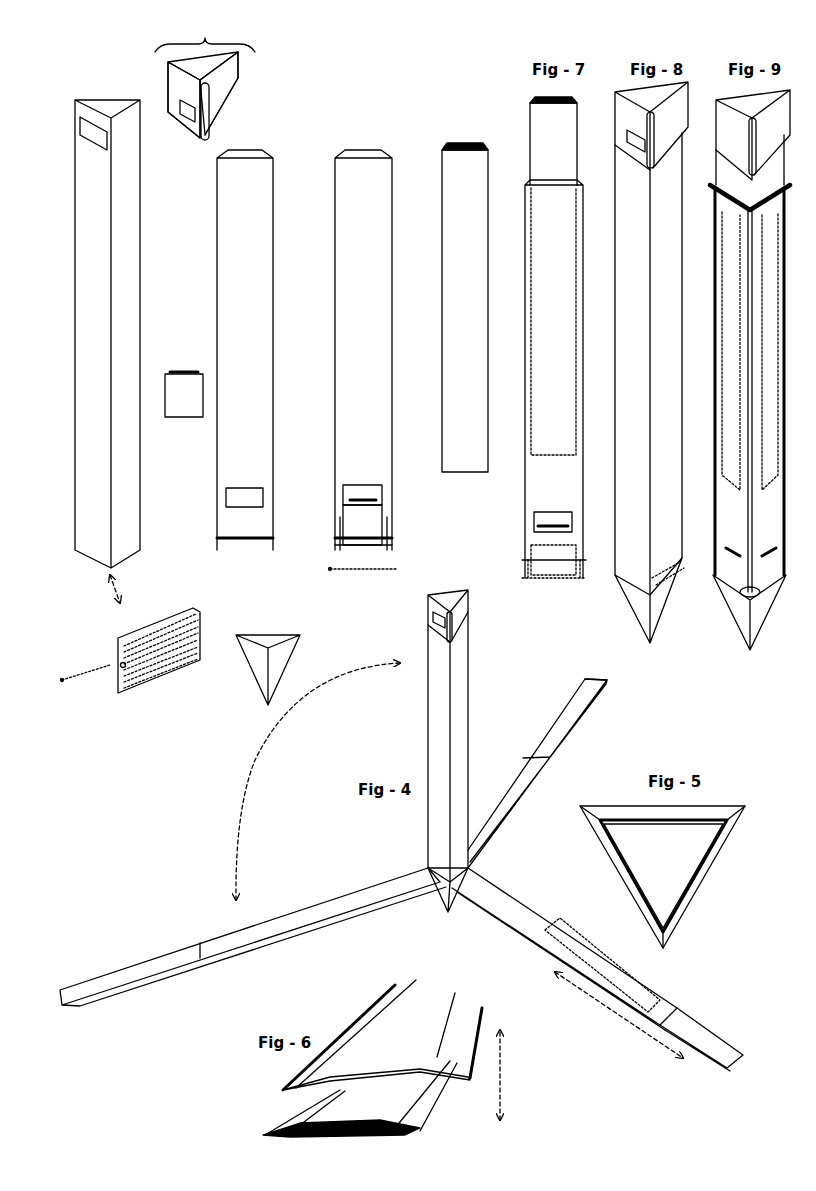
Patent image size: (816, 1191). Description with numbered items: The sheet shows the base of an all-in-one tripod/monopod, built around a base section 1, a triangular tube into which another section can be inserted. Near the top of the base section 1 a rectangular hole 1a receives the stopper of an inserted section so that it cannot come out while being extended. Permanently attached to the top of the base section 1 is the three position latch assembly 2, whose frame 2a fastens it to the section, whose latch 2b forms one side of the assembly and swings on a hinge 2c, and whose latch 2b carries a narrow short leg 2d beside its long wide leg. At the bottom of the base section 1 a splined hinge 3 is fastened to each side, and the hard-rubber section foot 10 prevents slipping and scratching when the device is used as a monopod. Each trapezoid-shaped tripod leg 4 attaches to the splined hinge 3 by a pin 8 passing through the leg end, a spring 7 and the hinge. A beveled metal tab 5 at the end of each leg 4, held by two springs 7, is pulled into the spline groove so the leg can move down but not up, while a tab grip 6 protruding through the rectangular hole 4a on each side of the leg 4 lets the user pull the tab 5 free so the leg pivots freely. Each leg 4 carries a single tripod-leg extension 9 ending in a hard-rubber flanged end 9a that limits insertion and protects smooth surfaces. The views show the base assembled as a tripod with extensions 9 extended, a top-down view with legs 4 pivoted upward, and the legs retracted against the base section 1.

In FIG. 4, the base section 1 is at (254, 491).
In FIG. 5, the base section 1 is at (663, 876).
In FIG. 4, the rectangular hole 1a is at (95, 135).
In FIG. 4, the three position latch assembly 2 is at (311, 328).
In FIG. 4, the frame 2a is at (193, 78).
In FIG. 4, the latch 2b is at (226, 90).
In FIG. 4, the hinge 2c is at (197, 121).
In FIG. 4, the narrow short leg 2d is at (190, 111).
In FIG. 4, the splined hinge 3 is at (156, 650).
In FIG. 4, the tripod leg 4 is at (368, 590).
In FIG. 5, the tripod leg 4 is at (662, 877).
In FIG. 6, the tripod leg 4 is at (382, 1035).
In FIG. 4, the rectangular hole 4a is at (246, 486).
In FIG. 4, the beveled metal tab 5 is at (352, 520).
In FIG. 4, the tab grip 6 is at (180, 370).
In FIG. 4, the spring 7 is at (340, 536).
In FIG. 4, the pin 8 is at (326, 568).
In FIG. 4, the tripod-leg extension 9 is at (414, 610).
In FIG. 6, the tripod-leg extension 9 is at (361, 1098).
In FIG. 4, the hard-rubber flanged end 9a is at (452, 152).
In FIG. 6, the hard-rubber flanged end 9a is at (432, 1128).
In FIG. 4, the section foot 10 is at (348, 785).